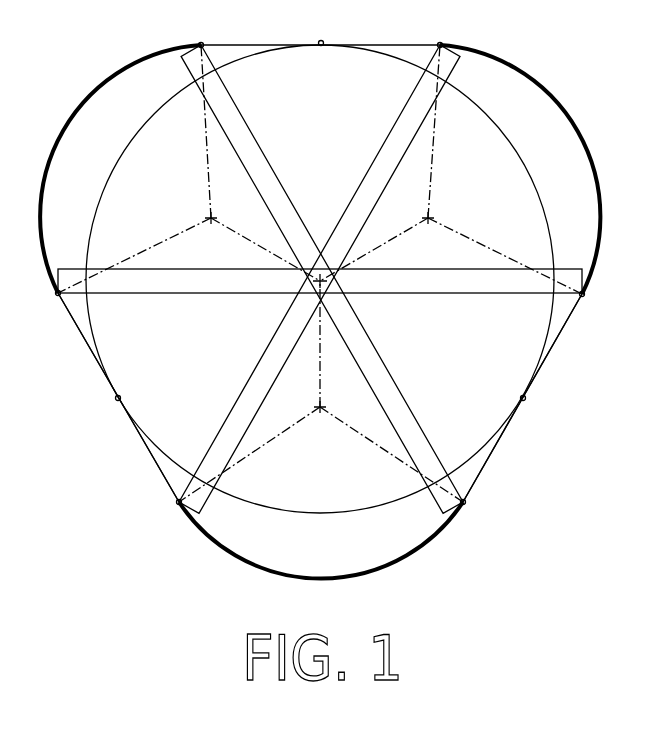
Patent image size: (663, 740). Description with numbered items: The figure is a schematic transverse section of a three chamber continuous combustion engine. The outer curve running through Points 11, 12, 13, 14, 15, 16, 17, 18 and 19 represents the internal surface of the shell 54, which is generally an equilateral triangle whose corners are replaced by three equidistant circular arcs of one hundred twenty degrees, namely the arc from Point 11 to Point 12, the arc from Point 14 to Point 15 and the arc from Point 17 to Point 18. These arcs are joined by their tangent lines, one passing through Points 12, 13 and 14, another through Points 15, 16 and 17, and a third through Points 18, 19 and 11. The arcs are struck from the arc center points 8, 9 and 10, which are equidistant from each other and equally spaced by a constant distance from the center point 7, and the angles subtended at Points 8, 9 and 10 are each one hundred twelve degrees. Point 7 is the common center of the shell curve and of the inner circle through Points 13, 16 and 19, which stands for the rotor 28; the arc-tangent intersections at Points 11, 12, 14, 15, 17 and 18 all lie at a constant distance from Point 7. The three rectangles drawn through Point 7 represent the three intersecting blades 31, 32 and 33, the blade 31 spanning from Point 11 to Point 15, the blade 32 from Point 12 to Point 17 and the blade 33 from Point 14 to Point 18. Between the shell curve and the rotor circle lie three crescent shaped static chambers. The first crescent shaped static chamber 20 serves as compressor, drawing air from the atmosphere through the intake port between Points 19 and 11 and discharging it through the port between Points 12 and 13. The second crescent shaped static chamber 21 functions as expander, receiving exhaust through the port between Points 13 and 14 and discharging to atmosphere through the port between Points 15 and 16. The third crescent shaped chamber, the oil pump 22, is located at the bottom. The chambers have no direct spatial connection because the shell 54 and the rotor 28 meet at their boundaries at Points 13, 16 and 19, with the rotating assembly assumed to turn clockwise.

The center point 7 is at (329, 260).
The arc center point 8 is at (203, 209).
The arc center point 9 is at (435, 210).
The arc center point 10 is at (320, 424).
The arc-tangent intersection point 11 is at (44, 294).
The arc-tangent intersection point 12 is at (205, 28).
The shell-rotor boundary point 13 is at (321, 27).
The arc-tangent intersection point 14 is at (440, 28).
The arc-tangent intersection point 15 is at (594, 302).
The shell-rotor boundary point 16 is at (538, 400).
The arc-tangent intersection point 17 is at (477, 504).
The arc-tangent intersection point 18 is at (165, 504).
The shell-rotor boundary point 19 is at (103, 398).
The first crescent shaped static chamber 20 is at (97, 115).
The second crescent shaped static chamber 21 is at (552, 117).
The oil pump 22 is at (332, 560).
The rotor 28 is at (532, 350).
The shell 54 is at (80, 350).
The blade 31 is at (133, 304).
The blade 32 is at (297, 354).
The blade 33 is at (247, 107).